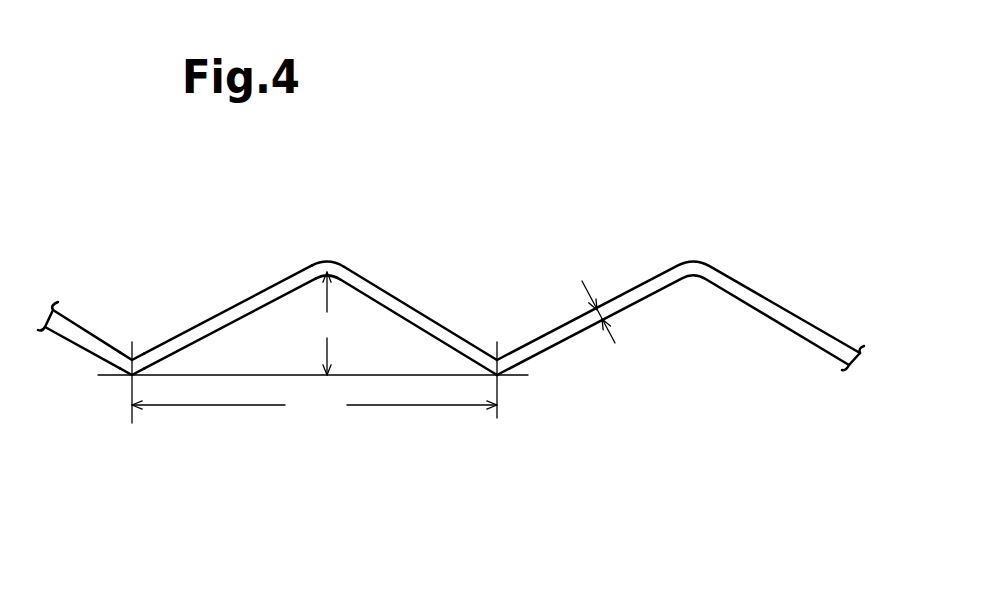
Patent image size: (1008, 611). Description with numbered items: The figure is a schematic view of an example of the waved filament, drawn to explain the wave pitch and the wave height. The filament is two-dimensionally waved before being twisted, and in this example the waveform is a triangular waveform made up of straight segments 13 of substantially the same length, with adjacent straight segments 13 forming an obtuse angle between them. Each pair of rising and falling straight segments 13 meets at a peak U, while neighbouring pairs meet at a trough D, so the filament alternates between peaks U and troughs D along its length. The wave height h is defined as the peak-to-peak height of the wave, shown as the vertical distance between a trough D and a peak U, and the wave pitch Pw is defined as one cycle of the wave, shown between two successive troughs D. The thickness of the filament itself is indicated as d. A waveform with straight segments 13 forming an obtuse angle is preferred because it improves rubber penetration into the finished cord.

The straight segments 13 is at (322, 270).
The upper crest (peak) of corrugated fin U is at (340, 247).
The lower trough (valley) of corrugated fin D is at (122, 387).
The wave height h is at (327, 323).
The wave pitch Pw is at (314, 405).
The fin plate thickness d is at (598, 301).